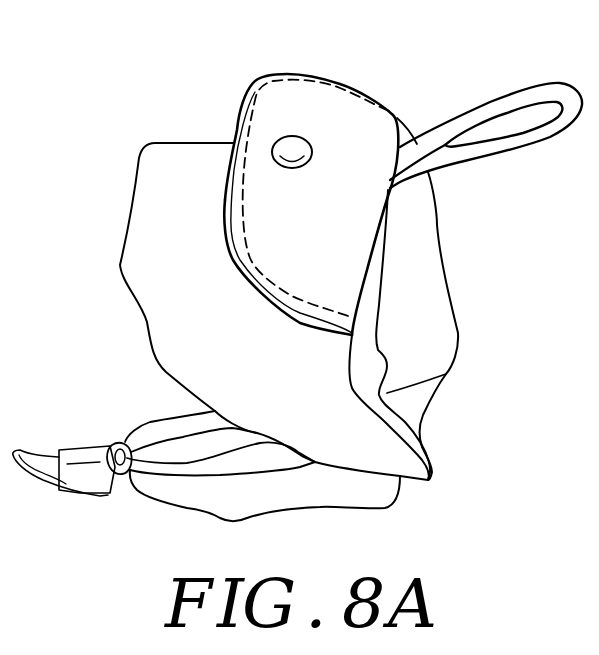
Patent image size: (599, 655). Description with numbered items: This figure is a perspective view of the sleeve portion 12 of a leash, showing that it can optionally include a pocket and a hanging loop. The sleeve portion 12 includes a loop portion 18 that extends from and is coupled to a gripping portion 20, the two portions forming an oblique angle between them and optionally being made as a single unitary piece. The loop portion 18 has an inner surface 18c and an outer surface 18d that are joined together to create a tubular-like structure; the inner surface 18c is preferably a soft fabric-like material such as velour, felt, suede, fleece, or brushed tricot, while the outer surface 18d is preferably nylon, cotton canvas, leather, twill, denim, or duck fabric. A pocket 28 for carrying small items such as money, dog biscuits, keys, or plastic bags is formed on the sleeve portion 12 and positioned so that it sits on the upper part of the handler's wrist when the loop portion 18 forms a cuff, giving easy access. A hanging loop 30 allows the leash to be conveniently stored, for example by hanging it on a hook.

The sleeve portion 12 is at (228, 66).
The loop portion 18 is at (182, 163).
The inner surface 18c is at (423, 312).
The outer surface 18d is at (207, 343).
The gripping portion 20 is at (182, 497).
The pocket 28 is at (341, 153).
The hanging loop 30 is at (513, 151).